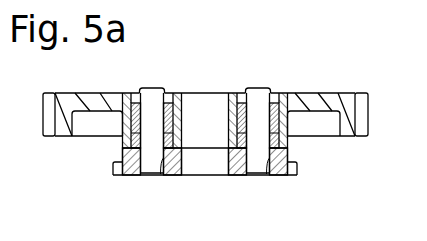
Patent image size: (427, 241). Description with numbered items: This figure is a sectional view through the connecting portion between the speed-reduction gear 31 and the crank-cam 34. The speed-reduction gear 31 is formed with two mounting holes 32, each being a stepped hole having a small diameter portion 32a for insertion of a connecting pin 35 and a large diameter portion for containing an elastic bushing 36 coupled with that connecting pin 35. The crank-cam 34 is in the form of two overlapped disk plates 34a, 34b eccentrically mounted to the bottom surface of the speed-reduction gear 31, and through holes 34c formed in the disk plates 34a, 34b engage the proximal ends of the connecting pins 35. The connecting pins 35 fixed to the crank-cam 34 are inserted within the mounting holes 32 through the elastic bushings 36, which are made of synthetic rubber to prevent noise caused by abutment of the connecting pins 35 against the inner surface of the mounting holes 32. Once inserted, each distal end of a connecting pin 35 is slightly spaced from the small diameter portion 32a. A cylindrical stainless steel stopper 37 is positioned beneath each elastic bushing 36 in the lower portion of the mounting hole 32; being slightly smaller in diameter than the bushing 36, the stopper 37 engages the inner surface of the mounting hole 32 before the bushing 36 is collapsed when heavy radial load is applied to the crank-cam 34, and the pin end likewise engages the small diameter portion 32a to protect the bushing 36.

The speed-reduction gear 31 is at (323, 97).
The mounting hole 32 is at (175, 177).
The small diameter portion 32a is at (136, 101).
The crank-cam 34 is at (258, 193).
The disk plate 34a is at (289, 159).
The disk plate 34b is at (291, 170).
The through hole 34c is at (159, 178).
The connecting pin 35 is at (151, 176).
The elastic bushing 36 is at (168, 101).
The stopper 37 is at (136, 176).